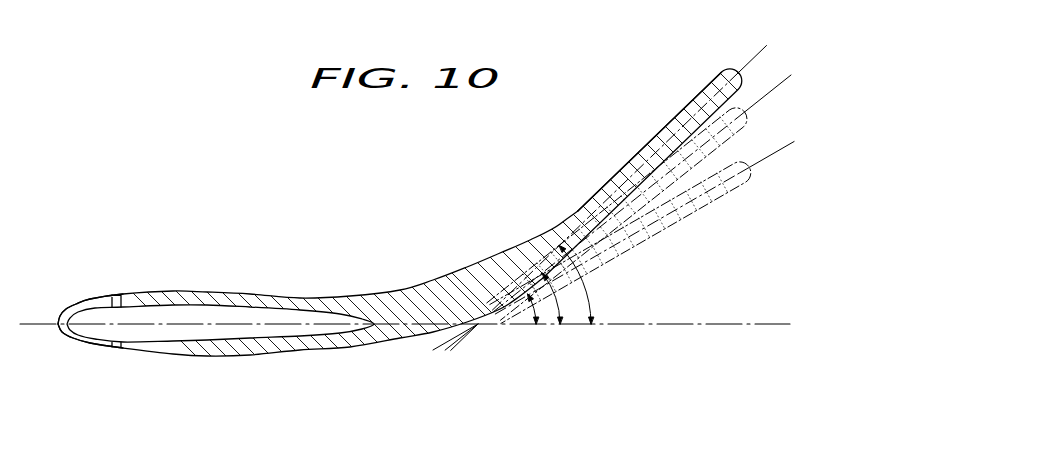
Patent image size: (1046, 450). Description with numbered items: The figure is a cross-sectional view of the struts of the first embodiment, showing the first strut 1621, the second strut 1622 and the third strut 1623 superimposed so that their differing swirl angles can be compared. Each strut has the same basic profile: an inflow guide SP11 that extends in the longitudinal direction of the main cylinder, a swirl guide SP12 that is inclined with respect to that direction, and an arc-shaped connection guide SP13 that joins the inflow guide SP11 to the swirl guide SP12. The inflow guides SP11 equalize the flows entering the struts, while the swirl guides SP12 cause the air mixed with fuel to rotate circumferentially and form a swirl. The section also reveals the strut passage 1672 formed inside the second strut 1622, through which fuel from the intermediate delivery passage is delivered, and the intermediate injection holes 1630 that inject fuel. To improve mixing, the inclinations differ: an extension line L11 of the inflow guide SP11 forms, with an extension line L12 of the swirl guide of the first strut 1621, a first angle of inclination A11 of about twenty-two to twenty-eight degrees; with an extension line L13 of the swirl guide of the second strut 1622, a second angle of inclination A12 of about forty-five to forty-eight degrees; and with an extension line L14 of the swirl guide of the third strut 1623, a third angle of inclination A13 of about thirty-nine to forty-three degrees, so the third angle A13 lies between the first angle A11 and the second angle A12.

The intermediate injection holes 1630 is at (120, 303).
The strut passage 1672 is at (180, 333).
The inflow guide SP11 is at (273, 357).
The connection guide SP13 is at (430, 279).
The swirl guide SP12 is at (645, 148).
The second strut 1622 is at (700, 93).
The third strut 1623 is at (733, 107).
The first strut 1621 is at (686, 212).
The extension line of the inflow guide L11 is at (770, 323).
The extension line of the swirl guide of the first strut L12 is at (789, 148).
The extension line of the swirl guide of the second strut L13 is at (764, 46).
The extension line of the swirl guide of the third strut L14 is at (788, 78).
The first angle of inclination A11 is at (534, 310).
The third angle of inclination A13 is at (555, 302).
The second angle of inclination A12 is at (597, 298).